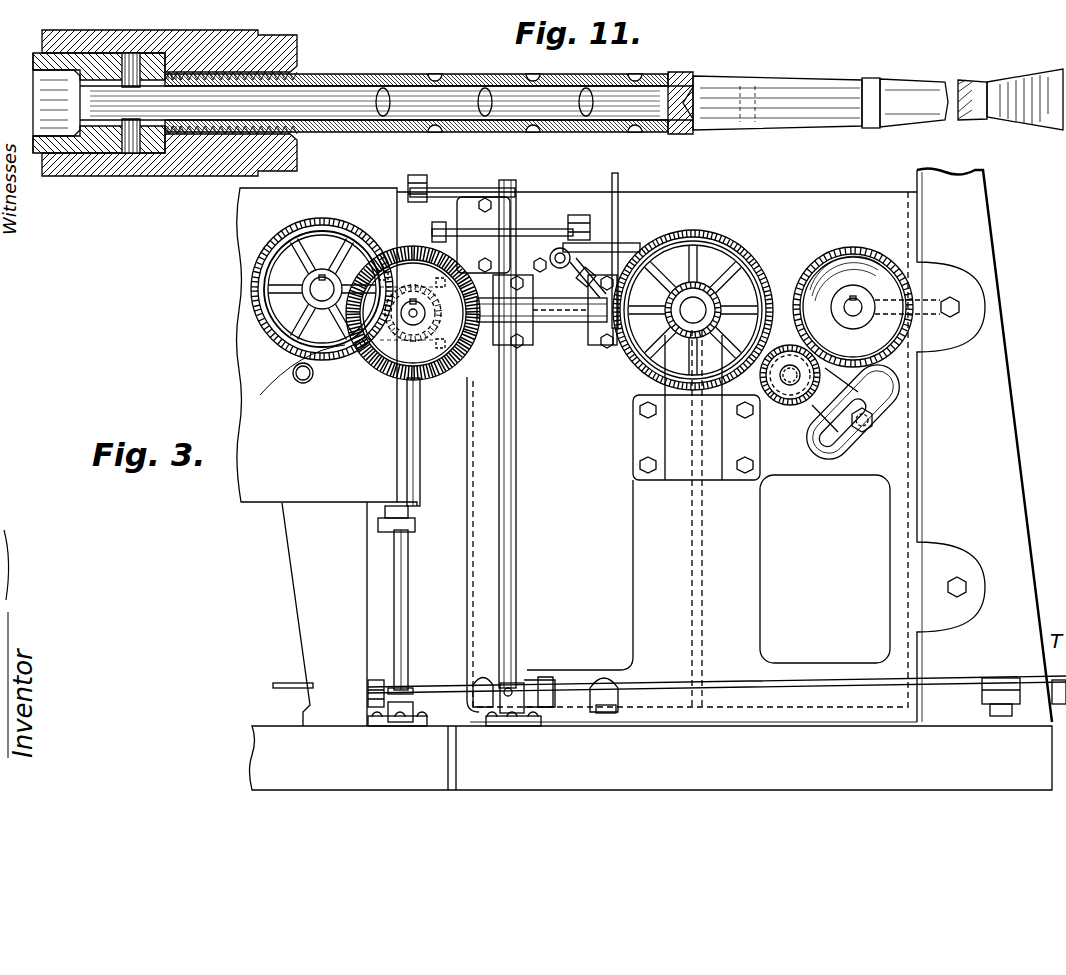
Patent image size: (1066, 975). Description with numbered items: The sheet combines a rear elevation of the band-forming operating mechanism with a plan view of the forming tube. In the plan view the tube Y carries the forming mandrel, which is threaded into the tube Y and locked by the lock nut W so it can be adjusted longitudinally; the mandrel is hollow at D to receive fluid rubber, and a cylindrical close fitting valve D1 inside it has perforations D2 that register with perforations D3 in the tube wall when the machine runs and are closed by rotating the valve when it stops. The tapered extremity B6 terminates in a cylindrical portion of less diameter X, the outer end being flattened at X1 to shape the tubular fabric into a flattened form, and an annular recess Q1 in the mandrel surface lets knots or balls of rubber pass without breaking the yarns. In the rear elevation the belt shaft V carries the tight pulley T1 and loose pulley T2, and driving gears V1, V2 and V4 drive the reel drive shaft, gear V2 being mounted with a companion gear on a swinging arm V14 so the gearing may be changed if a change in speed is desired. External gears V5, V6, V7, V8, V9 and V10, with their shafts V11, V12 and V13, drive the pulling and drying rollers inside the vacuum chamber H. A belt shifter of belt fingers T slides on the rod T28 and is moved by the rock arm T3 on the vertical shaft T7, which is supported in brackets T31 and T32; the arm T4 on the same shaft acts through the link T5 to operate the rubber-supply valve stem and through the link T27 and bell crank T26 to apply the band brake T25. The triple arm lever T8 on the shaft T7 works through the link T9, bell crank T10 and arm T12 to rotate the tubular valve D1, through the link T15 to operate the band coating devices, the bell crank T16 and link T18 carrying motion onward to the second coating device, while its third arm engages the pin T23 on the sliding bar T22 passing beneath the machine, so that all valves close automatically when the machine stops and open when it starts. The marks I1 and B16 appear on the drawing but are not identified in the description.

In FIG. 11, the lock nut W is at (298, 45).
In FIG. 11, the tube Y is at (42, 38).
In FIG. 11, the cylindrical close fitting valve D1 is at (352, 110).
In FIG. 11, the hollow portion D is at (678, 134).
In FIG. 11, the perforations D2 is at (618, 132).
In FIG. 11, the perforations D3 is at (530, 134).
In FIG. 11, the tapered extremity B6 is at (860, 127).
In FIG. 11, the annular recess Q1 is at (872, 128).
In FIG. 11, the cylindrical portion of less diameter X is at (972, 122).
In FIG. 11, the flattened outer extremity X1 is at (1046, 112).
In FIG. 3, the vacuum chamber H is at (318, 208).
In FIG. 3, the shaft V13 is at (300, 300).
In FIG. 3, the external gear V9 is at (407, 342).
In FIG. 3, the external gear V8 is at (392, 340).
In FIG. 3, the external gear V10 is at (293, 373).
In FIG. 3, the shaft V12 is at (350, 362).
In FIG. 3, the shaft I1 is at (413, 313).
In FIG. 3, the link T5 is at (408, 180).
In FIG. 3, the arm T4 is at (457, 190).
In FIG. 3, the link T27 is at (432, 231).
In FIG. 3, the rock arm T3 is at (543, 225).
In FIG. 3, the bell crank T26 is at (566, 240).
In FIG. 3, the belt fingers T is at (626, 250).
In FIG. 3, the band brake T25 is at (656, 246).
In FIG. 3, the loose pulley T2 is at (665, 212).
In FIG. 3, the external gear V7 is at (483, 348).
In FIG. 3, the shaft V11 is at (579, 327).
In FIG. 3, the bracket T32 is at (536, 325).
In FIG. 3, the rod T28 is at (563, 330).
In FIG. 3, the vertical shaft T7 is at (517, 546).
In FIG. 3, the external gear V6 is at (708, 238).
In FIG. 3, the external gear V5 is at (768, 240).
In FIG. 3, the driving gear V1 is at (713, 250).
In FIG. 3, the belt shaft V is at (687, 324).
In FIG. 3, the tight pulley T1 is at (640, 373).
In FIG. 3, the driving gear V4 is at (830, 257).
In FIG. 3, the shaft B16 is at (856, 308).
In FIG. 3, the driving gear V2 is at (783, 345).
In FIG. 3, the swinging arm V14 is at (893, 381).
In FIG. 3, the arm T12 is at (408, 604).
In FIG. 3, the link T18 is at (292, 683).
In FIG. 3, the bell crank T16 is at (443, 696).
In FIG. 3, the link T9 is at (663, 690).
In FIG. 3, the link T15 is at (473, 683).
In FIG. 3, the triple arm lever T8 is at (563, 686).
In FIG. 3, the bracket T31 is at (550, 710).
In FIG. 3, the pin T23 is at (614, 680).
In FIG. 3, the sliding bar T22 is at (617, 700).
In FIG. 3, the bell crank T10 is at (1024, 678).